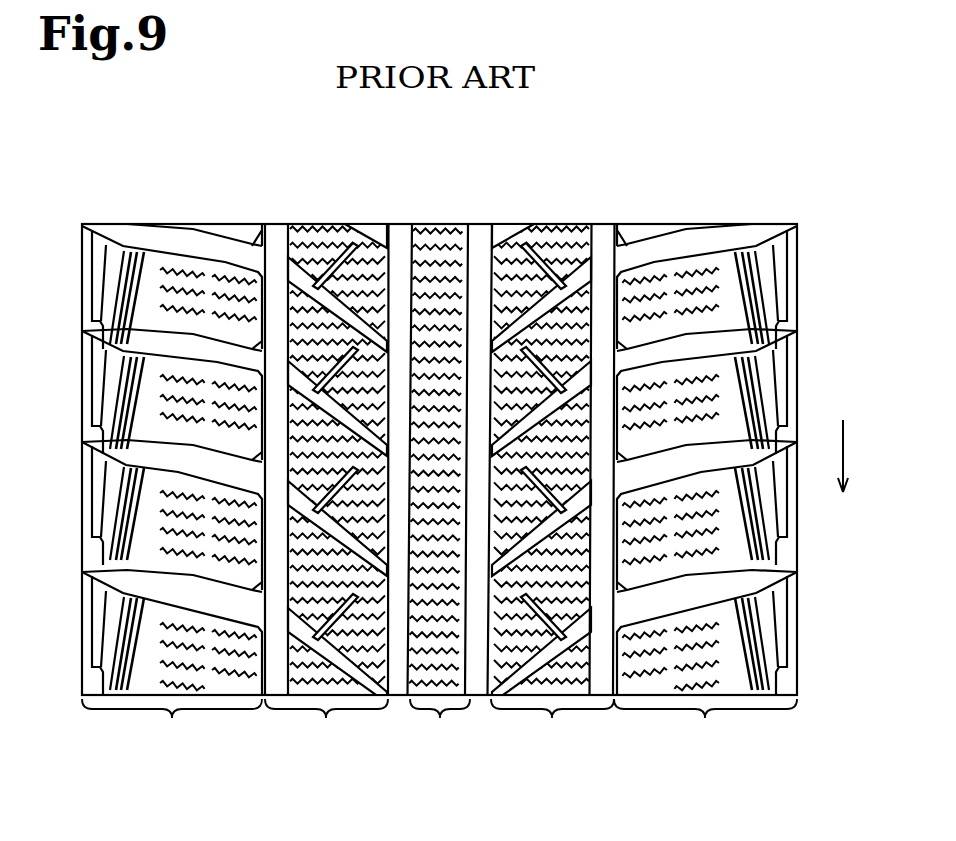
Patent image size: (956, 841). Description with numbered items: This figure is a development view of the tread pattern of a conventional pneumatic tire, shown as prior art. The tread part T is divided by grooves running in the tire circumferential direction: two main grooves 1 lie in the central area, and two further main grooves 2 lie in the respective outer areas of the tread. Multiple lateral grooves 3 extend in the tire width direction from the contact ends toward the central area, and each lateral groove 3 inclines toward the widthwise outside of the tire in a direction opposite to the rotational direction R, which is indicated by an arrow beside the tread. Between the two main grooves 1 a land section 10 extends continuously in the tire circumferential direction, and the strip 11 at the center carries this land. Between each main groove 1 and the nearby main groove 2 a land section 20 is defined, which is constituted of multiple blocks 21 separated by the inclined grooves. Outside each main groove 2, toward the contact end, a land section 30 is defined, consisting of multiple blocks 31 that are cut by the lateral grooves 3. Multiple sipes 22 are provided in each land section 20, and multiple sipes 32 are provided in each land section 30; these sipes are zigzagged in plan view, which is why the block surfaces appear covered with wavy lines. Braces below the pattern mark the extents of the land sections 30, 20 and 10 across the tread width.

The main groove (first groove) 1 is at (398, 237).
The main groove (second groove) 2 is at (277, 232).
The lateral groove 3 is at (190, 238).
The block 31 is at (167, 250).
The sipe 32 is at (207, 273).
The block 21 is at (318, 240).
The sipe 22 is at (363, 285).
The center rib 11 is at (446, 238).
The land section 10 is at (439, 458).
The land section 20 is at (439, 458).
The land section 30 is at (439, 447).
The tread part T is at (745, 219).
The rotational direction R is at (852, 456).